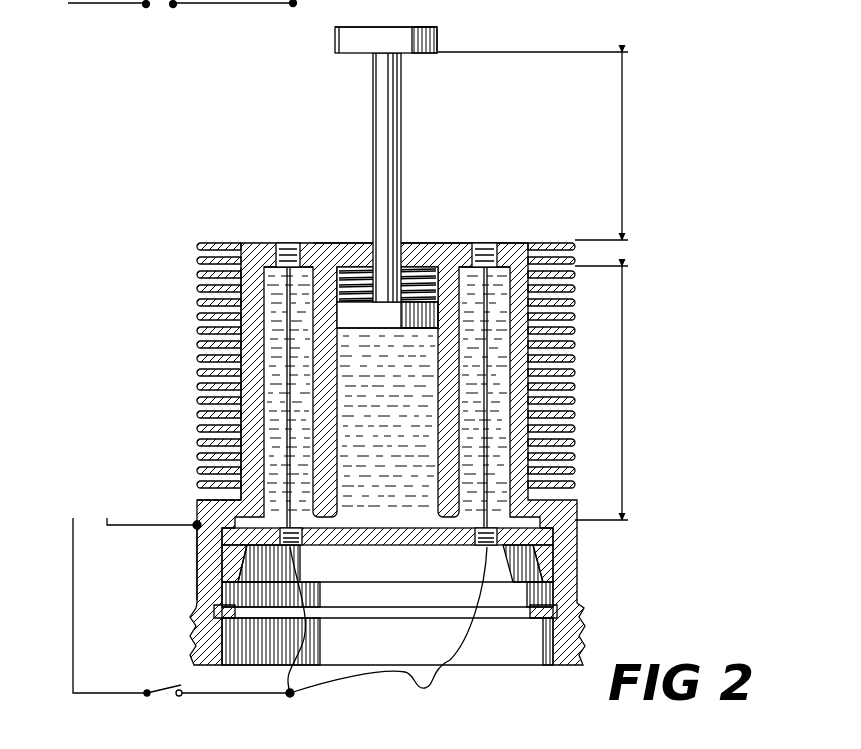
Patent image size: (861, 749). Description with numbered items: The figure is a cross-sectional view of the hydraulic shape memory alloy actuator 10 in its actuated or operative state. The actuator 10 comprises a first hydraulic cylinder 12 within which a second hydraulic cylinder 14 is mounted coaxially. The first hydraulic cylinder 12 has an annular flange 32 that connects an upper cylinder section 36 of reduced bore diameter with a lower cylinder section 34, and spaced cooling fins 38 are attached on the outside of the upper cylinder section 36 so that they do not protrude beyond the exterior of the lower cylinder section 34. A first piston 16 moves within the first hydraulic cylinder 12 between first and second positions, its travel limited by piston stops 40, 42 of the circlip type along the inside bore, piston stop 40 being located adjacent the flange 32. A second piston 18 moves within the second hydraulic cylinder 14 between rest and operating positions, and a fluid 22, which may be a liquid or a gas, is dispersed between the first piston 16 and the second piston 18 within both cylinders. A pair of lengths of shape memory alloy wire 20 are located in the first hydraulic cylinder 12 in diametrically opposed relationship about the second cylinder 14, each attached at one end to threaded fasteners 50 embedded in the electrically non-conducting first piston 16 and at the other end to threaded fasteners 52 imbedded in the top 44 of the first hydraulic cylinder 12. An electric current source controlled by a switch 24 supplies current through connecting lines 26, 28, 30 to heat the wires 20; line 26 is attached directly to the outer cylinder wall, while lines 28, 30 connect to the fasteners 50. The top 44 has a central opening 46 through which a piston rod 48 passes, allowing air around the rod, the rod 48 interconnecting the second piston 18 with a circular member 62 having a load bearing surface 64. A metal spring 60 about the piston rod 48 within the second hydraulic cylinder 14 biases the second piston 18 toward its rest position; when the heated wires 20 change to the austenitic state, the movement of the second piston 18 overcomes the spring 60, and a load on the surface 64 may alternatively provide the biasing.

The hydraulic shape memory alloy actuator 10 is at (202, 167).
The first hydraulic cylinder 12 is at (590, 500).
The second hydraulic cylinder 14 is at (535, 328).
The first piston 16 is at (461, 547).
The second piston 18 is at (378, 328).
The shape memory alloy wire 20 is at (520, 266).
The fluid 22 is at (385, 458).
The switch 24 is at (168, 688).
The connecting line 26 is at (145, 523).
The connecting line 28 is at (303, 632).
The connecting line 30 is at (445, 680).
The annular flange 32 is at (201, 476).
The lower cylinder section 34 is at (197, 580).
The upper cylinder section 36 is at (236, 366).
The cooling fins 38 is at (216, 245).
The piston stop 40 is at (548, 535).
The piston stop 42 is at (548, 622).
The top 44 is at (450, 244).
The central opening 46 is at (405, 244).
The piston rod 48 is at (378, 125).
The threaded fasteners 50 is at (293, 549).
The threaded fasteners 52 is at (291, 245).
The spring 60 is at (363, 266).
The circular member 62 is at (417, 28).
The load bearing surface 64 is at (353, 30).